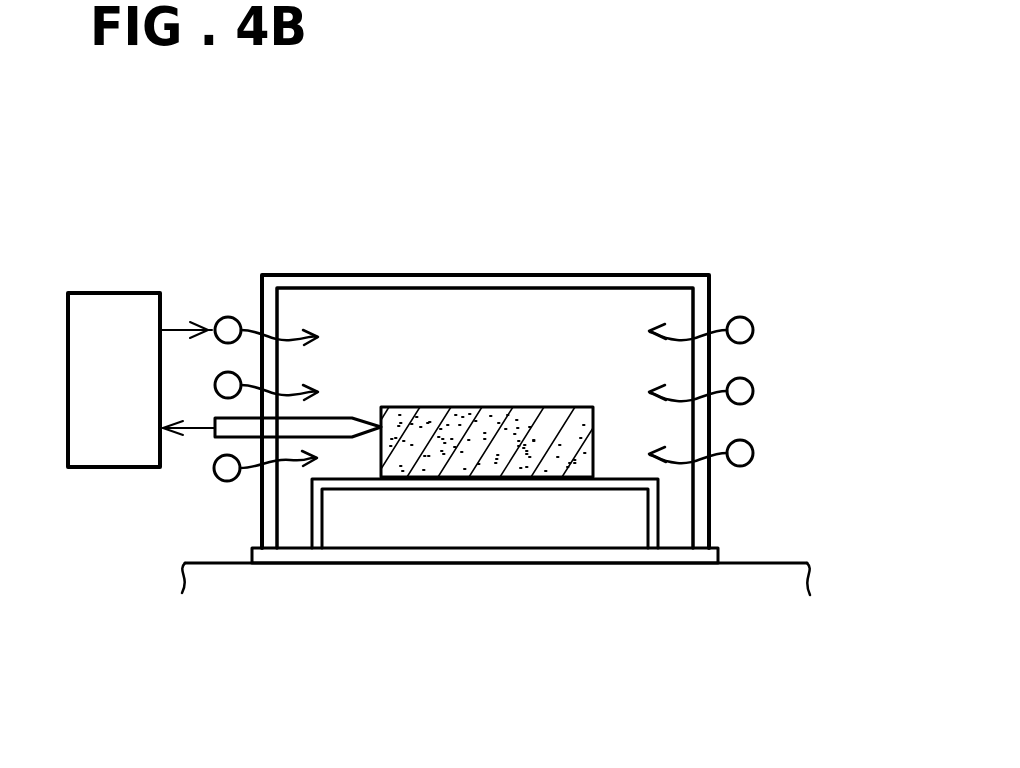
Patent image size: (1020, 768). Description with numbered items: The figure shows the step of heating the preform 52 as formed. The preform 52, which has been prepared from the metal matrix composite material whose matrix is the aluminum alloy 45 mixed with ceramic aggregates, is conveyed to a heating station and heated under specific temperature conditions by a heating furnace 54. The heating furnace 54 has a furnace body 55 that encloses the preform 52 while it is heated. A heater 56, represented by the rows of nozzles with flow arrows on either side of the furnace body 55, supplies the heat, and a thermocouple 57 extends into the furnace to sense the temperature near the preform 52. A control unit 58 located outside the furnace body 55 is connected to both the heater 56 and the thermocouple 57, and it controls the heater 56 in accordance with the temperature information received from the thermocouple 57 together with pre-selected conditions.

The aluminum alloy 45 is at (463, 460).
The preform 52 is at (506, 401).
The heating furnace 54 is at (312, 266).
The furnace body 55 is at (392, 273).
The heater 56 is at (230, 305).
The thermocouple 57 is at (352, 419).
The control unit 58 is at (110, 292).